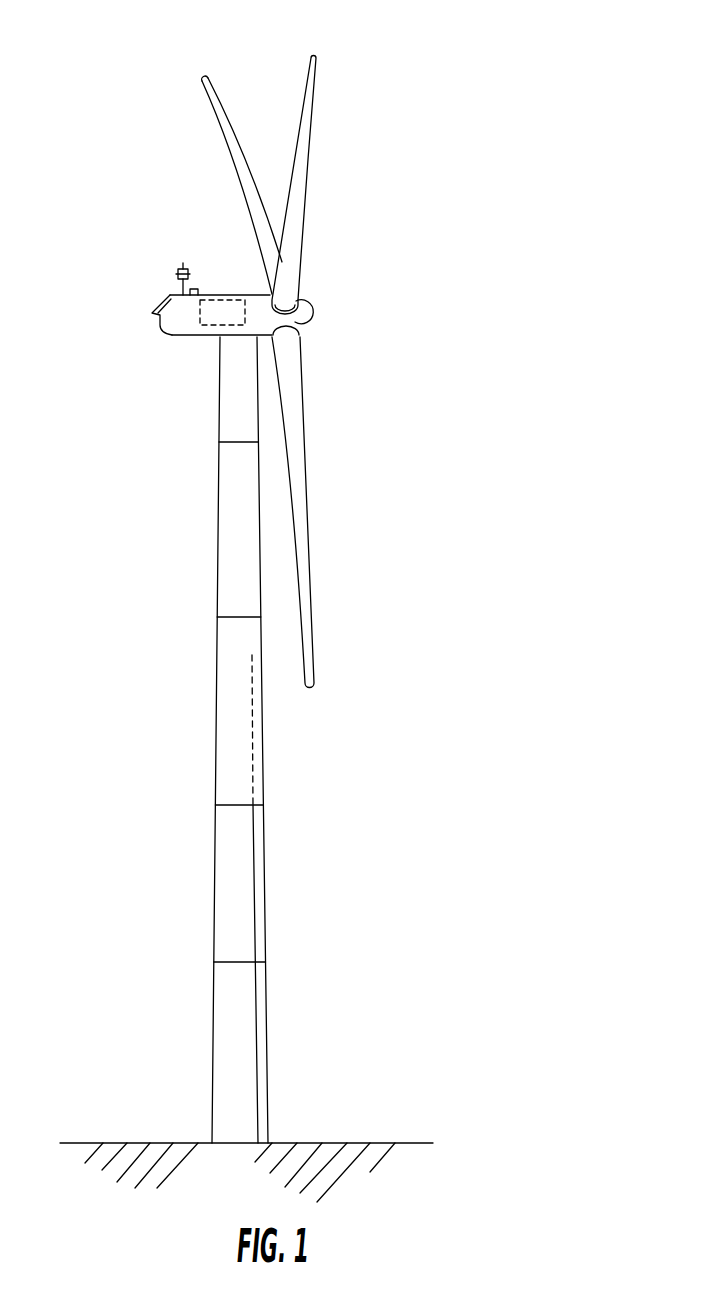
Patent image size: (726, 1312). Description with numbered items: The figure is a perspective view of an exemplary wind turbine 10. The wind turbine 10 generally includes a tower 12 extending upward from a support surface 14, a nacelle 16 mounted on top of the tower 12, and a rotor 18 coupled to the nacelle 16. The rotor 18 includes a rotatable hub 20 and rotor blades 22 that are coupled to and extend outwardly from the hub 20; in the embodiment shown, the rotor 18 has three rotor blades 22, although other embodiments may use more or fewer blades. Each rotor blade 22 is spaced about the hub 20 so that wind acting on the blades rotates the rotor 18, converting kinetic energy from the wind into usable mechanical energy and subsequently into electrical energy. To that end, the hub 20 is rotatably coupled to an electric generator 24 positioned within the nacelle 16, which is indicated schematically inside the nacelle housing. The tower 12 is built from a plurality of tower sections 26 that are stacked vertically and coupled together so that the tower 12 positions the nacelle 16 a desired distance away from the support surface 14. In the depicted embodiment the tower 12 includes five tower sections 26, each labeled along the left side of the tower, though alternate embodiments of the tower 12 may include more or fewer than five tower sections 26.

The wind turbine 10 is at (470, 50).
The tower 12 is at (372, 828).
The support surface 14 is at (118, 1143).
The nacelle 16 is at (190, 336).
The rotor 18 is at (335, 262).
The rotatable hub 20 is at (313, 313).
The rotor blade 22 is at (303, 97).
The electric generator 24 is at (220, 284).
The tower sections 26 is at (220, 386).